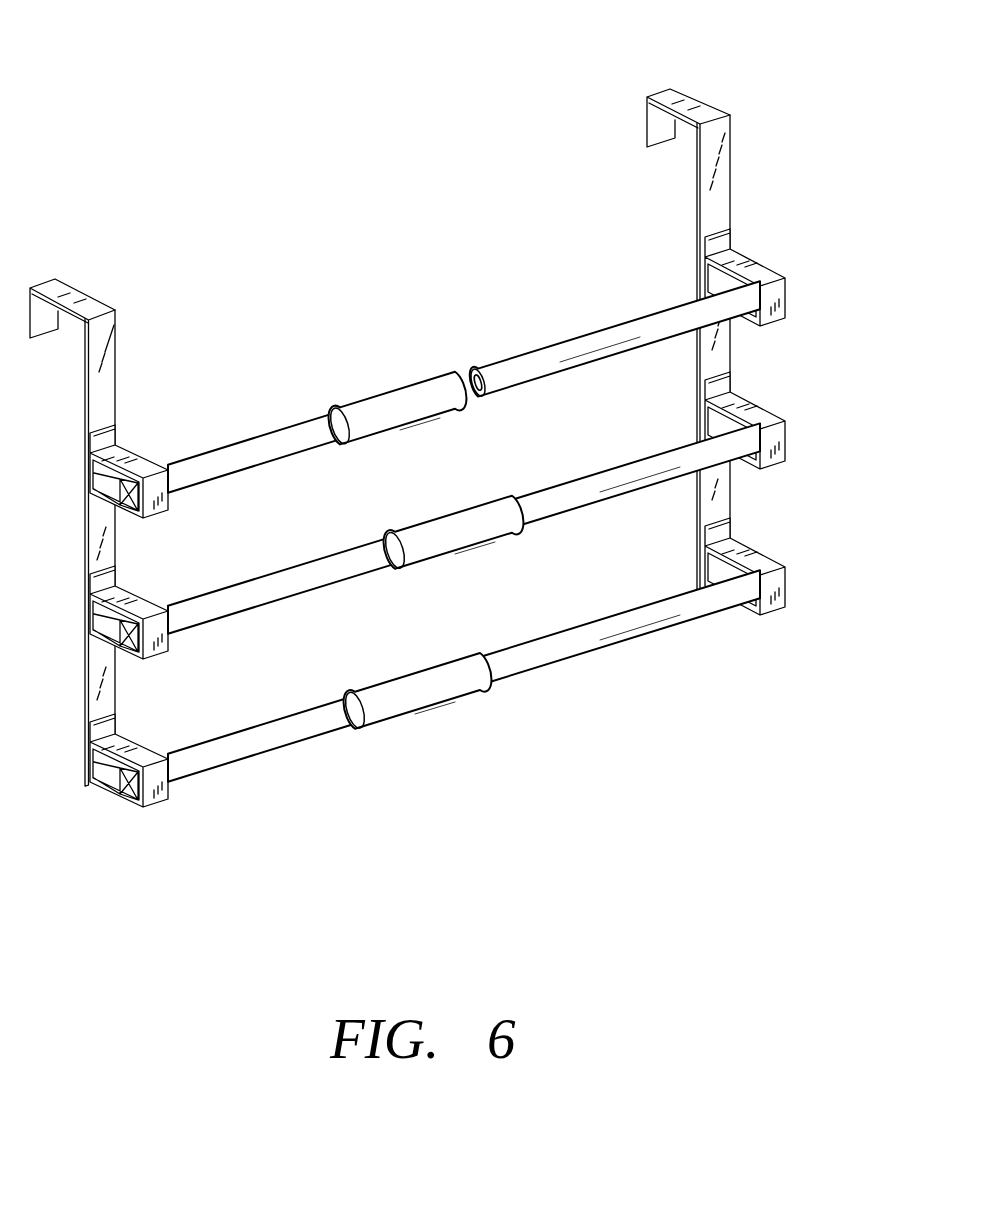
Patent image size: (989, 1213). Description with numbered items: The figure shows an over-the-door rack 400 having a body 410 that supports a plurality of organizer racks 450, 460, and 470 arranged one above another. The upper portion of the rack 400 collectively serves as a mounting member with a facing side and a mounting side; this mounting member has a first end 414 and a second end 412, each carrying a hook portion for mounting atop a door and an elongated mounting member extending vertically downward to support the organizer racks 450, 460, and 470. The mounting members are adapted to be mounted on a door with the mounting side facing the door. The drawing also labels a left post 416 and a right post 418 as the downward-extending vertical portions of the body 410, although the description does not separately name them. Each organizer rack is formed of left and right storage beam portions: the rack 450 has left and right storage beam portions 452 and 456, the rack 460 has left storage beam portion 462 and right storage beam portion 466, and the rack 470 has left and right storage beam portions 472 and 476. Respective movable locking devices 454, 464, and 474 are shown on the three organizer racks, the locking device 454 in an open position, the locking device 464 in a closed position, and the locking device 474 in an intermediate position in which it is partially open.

The rack 400 is at (270, 103).
The body 410 is at (728, 104).
The second end 412 is at (672, 95).
The first end 414 is at (60, 290).
The left post 416 is at (115, 540).
The right post 418 is at (724, 343).
The organizer rack 450 is at (280, 462).
The left storage beam portion 452 is at (233, 482).
The movable locking device 454 is at (400, 424).
The right storage beam portion 456 is at (598, 358).
The organizer rack 460 is at (285, 614).
The left storage beam portion 462 is at (233, 638).
The movable locking device 464 is at (452, 562).
The middle rod outer tube 466 is at (612, 503).
The organizer rack 470 is at (298, 755).
The left storage beam portion 472 is at (243, 780).
The movable locking device 474 is at (408, 724).
The right storage beam portion 476 is at (622, 650).